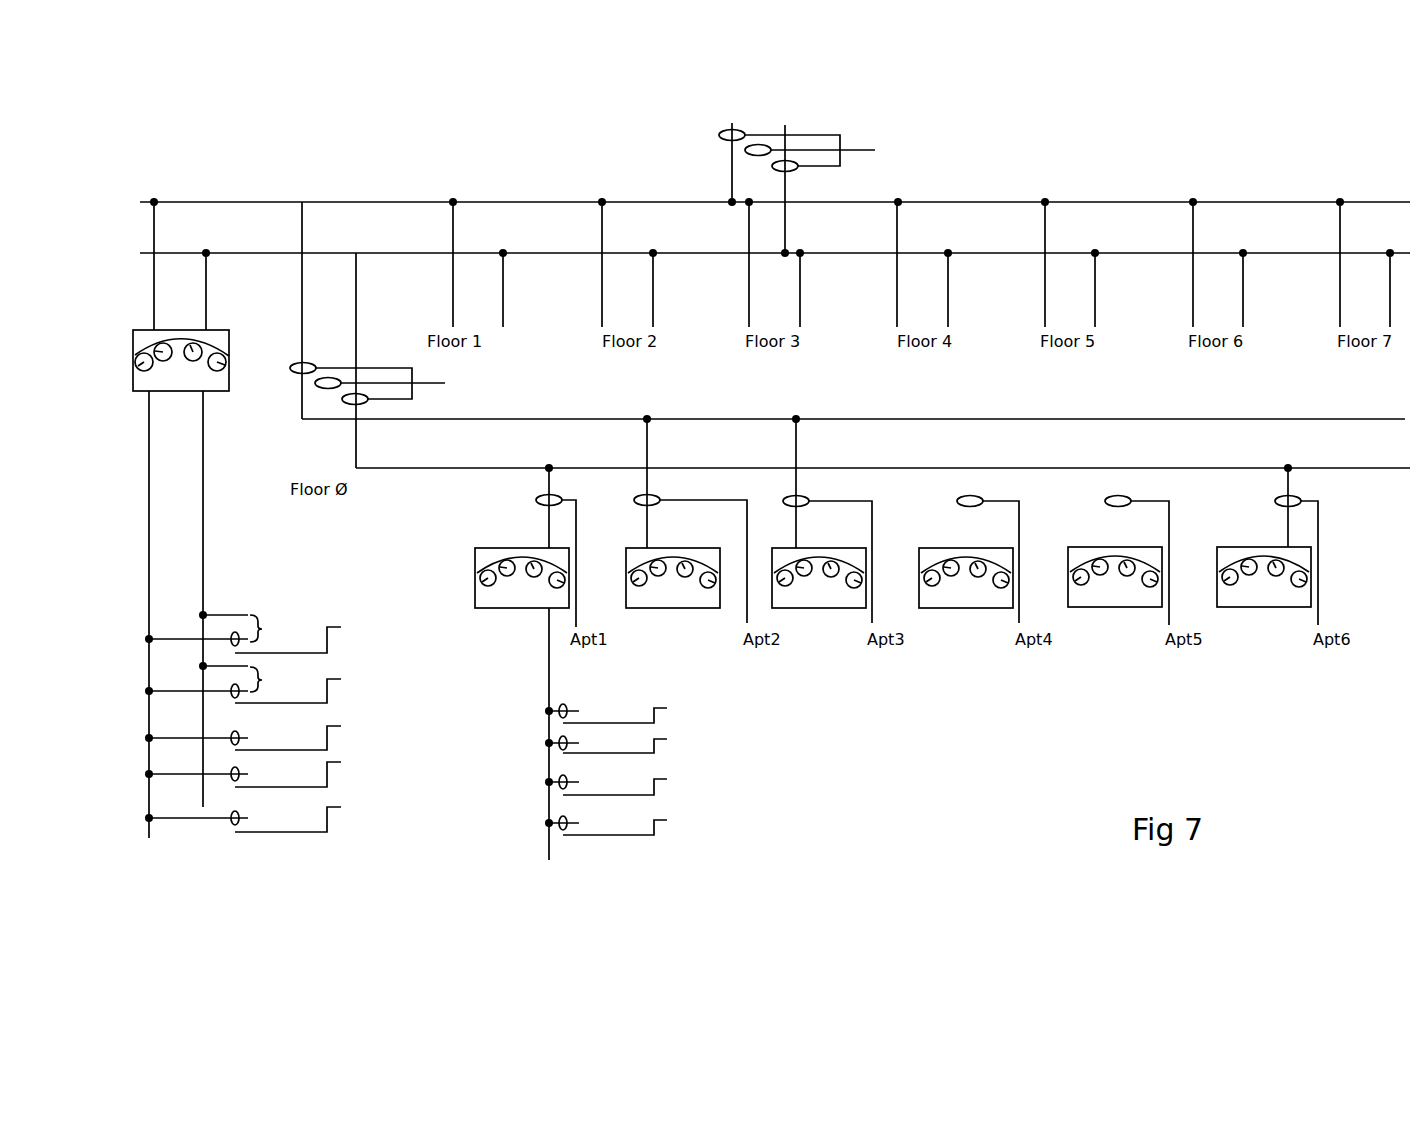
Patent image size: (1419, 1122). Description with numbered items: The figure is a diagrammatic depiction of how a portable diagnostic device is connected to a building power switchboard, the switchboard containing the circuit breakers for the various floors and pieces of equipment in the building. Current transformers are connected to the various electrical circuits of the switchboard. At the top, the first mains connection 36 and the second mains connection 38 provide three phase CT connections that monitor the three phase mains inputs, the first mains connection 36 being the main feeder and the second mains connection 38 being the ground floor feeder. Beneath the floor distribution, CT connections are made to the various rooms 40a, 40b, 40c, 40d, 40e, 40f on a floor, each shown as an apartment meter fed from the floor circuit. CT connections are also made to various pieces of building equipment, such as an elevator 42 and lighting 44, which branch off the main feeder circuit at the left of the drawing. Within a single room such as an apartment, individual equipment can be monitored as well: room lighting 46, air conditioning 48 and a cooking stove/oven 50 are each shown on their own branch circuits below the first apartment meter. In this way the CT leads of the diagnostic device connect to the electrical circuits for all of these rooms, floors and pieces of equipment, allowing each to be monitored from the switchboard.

The Mains 1 36 is at (875, 150).
The Mains 2 38 is at (445, 380).
The room 40a is at (493, 548).
The room 40b is at (707, 548).
The room 40c is at (855, 548).
The room 40d is at (1000, 548).
The room 40e is at (1148, 547).
The room 40f is at (1298, 547).
The elevator 42 is at (341, 627).
The lighting 44 is at (341, 763).
The room lighting 46 is at (610, 836).
The air conditioning 48 is at (663, 742).
The cooking stove/oven 50 is at (667, 709).